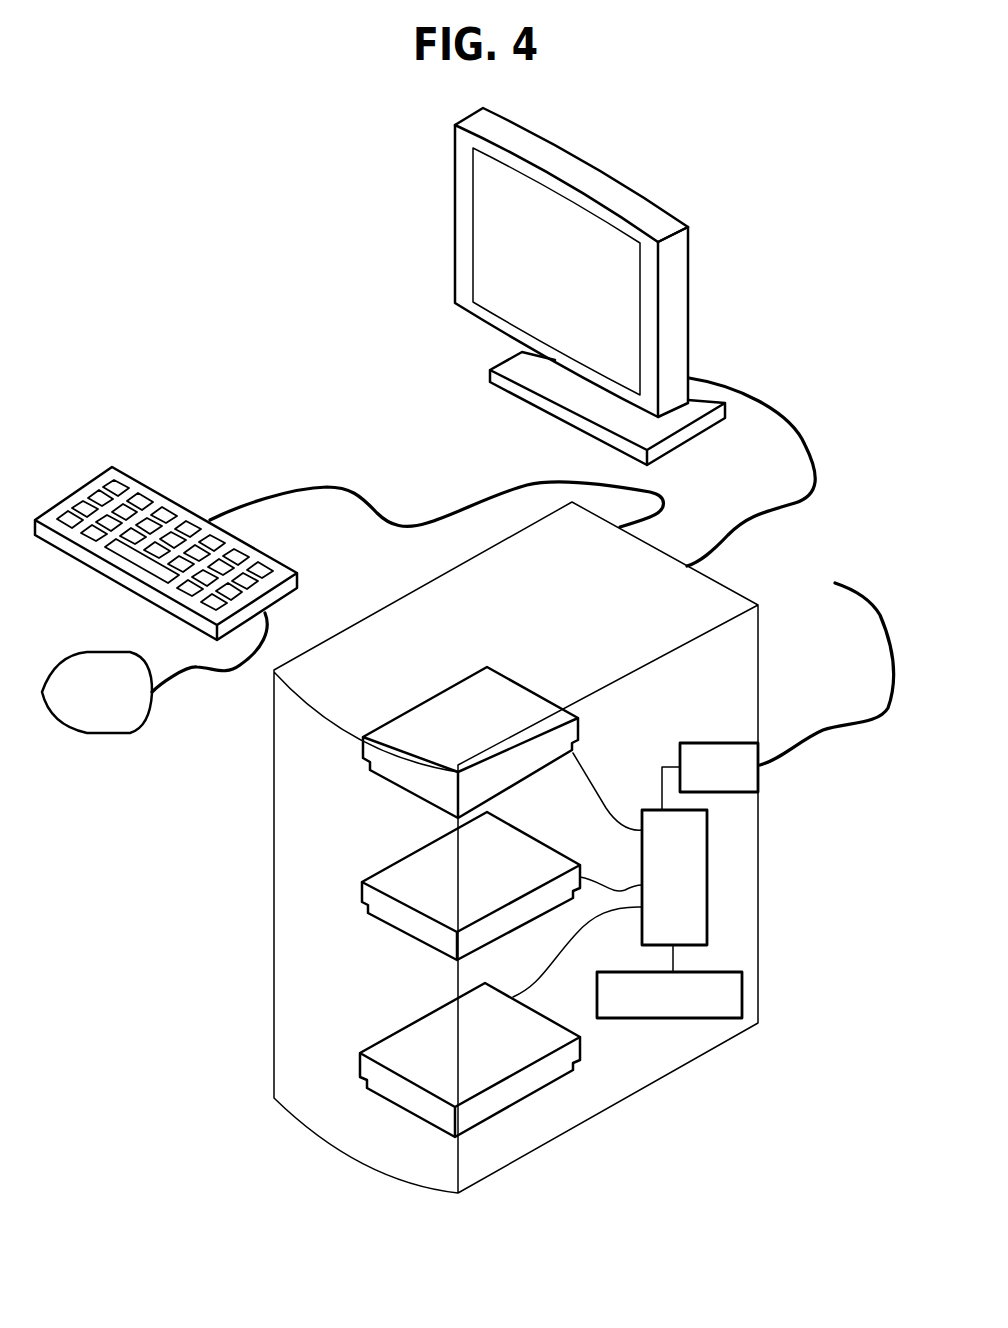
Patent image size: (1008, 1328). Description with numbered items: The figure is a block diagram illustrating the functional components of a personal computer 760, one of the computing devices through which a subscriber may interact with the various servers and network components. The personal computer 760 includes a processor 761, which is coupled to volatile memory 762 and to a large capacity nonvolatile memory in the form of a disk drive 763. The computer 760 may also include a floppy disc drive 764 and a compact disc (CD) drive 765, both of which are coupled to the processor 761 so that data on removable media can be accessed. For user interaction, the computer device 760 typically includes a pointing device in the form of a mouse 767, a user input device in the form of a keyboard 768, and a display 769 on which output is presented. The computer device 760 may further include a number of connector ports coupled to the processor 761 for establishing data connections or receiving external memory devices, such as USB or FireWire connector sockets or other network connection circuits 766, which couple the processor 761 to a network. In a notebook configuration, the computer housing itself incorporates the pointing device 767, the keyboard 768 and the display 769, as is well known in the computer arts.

The personal computer 760 is at (759, 630).
The processor 761 is at (693, 890).
The volatile memory 762 is at (688, 1007).
The disk drive 763 is at (580, 1053).
The floppy disc drive 764 is at (580, 740).
The compact disc (CD) drive 765 is at (522, 925).
The network connection circuits 766 is at (738, 779).
The mouse 767 is at (93, 734).
The keyboard 768 is at (298, 575).
The display 769 is at (688, 303).